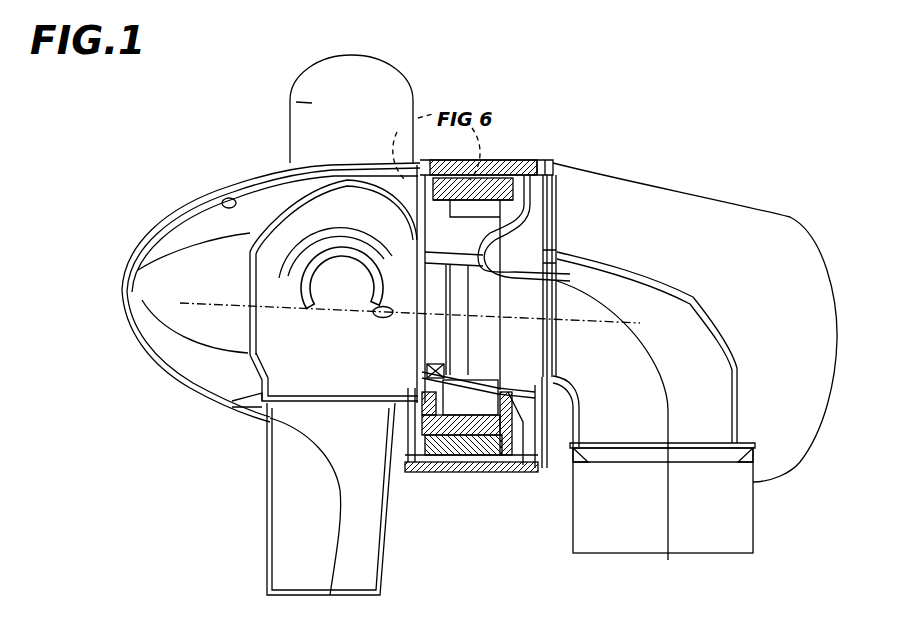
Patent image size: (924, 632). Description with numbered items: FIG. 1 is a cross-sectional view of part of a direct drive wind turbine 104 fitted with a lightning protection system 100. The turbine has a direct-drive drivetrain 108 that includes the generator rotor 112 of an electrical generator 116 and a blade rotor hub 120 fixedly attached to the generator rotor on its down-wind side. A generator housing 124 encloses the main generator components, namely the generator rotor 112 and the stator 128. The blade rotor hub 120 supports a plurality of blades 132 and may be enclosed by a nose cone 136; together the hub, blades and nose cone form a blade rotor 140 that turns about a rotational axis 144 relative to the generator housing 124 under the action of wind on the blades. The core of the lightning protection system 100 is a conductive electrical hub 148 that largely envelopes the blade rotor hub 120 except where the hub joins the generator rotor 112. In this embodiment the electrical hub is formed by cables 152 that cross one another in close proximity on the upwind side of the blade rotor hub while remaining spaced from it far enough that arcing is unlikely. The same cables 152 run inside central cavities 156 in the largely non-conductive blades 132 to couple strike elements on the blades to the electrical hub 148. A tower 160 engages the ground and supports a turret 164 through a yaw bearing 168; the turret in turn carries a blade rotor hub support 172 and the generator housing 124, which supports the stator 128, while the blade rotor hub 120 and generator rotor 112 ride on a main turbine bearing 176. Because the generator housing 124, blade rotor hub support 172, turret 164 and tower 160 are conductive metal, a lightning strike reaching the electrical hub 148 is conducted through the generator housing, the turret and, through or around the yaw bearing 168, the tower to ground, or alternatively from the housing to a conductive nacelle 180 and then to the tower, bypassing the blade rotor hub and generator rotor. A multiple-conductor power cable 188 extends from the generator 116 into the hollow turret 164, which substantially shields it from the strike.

The lightning protection system 100 is at (198, 375).
The direct drive wind turbine 104 is at (733, 147).
The direct-drive drivetrain 108 is at (501, 480).
The generator rotor 112 is at (441, 476).
The electrical generator 116 is at (550, 114).
The blade rotor hub 120 is at (214, 393).
The generator housing 124 is at (461, 490).
The stator 128 is at (517, 160).
The blades 132 is at (298, 100).
The nose cone 136 is at (160, 218).
The blade rotor 140 is at (112, 345).
The rotational axis 144 is at (208, 303).
The electrical hub 148 is at (141, 371).
The cables 152 is at (205, 227).
The central cavities 156 is at (378, 470).
The tower 160 is at (753, 537).
The turret 164 is at (673, 280).
The yaw bearing 168 is at (580, 457).
The blade rotor hub support 172 is at (557, 348).
The main turbine bearing 176 is at (417, 357).
The conductive nacelle 180 is at (795, 225).
The multiple-conductor power cable 188 is at (671, 527).